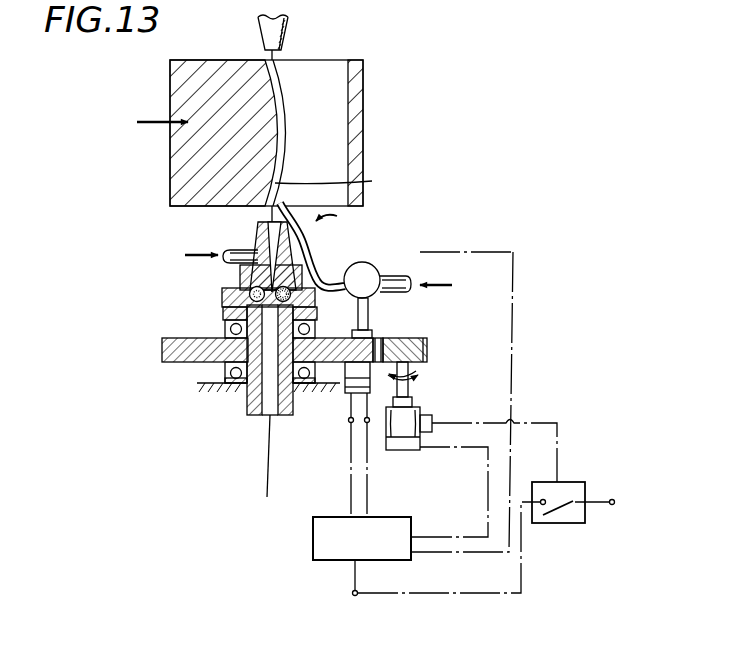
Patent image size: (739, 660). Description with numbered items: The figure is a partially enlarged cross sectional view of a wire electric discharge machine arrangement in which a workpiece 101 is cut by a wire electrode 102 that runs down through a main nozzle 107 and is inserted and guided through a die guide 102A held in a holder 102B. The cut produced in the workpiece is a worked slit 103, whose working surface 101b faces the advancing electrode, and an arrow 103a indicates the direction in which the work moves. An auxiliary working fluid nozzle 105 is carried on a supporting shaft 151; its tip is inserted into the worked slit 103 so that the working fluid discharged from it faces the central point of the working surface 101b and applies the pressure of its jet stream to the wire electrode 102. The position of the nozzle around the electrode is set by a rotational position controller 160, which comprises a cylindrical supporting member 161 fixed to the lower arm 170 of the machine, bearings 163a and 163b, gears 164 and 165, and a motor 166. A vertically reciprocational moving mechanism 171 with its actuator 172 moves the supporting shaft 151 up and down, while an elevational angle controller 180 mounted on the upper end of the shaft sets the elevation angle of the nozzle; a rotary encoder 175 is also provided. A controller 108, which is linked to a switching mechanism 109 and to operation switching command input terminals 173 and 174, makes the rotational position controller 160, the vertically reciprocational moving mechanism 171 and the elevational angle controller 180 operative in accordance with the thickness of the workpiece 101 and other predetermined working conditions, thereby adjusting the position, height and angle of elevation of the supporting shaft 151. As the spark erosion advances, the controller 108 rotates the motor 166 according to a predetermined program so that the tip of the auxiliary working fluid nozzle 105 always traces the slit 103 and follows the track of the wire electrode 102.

The workpiece 101 is at (207, 68).
The wire electrode 102 is at (286, 162).
The worked slit 103 is at (330, 78).
The arrow indicative of the work moving direction 103a is at (147, 118).
The working surface 101b is at (345, 184).
The main nozzle 107 is at (287, 24).
The auxiliary working fluid nozzle 105 is at (308, 252).
The elevational angle controller 180 is at (366, 272).
The die guide 102A is at (247, 286).
The holder 102B is at (283, 292).
The supporting shaft 151 is at (368, 303).
The bearing 163a is at (313, 322).
The bearing 163b is at (307, 393).
The rotational position controller 160 is at (432, 345).
The gear 164 is at (162, 346).
The gear 165 is at (427, 358).
The lower arm 170 is at (204, 388).
The cylindrical supporting member 161 is at (246, 398).
The vertically reciprocational moving mechanism 171 is at (347, 415).
The actuator 172 is at (348, 428).
The operation switching command input terminal 174 is at (344, 440).
The rotary encoder 175 is at (397, 434).
The motor 166 is at (372, 425).
The operation switching command input terminal 173 is at (367, 424).
The controller 108 is at (313, 550).
The switching mechanism 109 is at (575, 523).